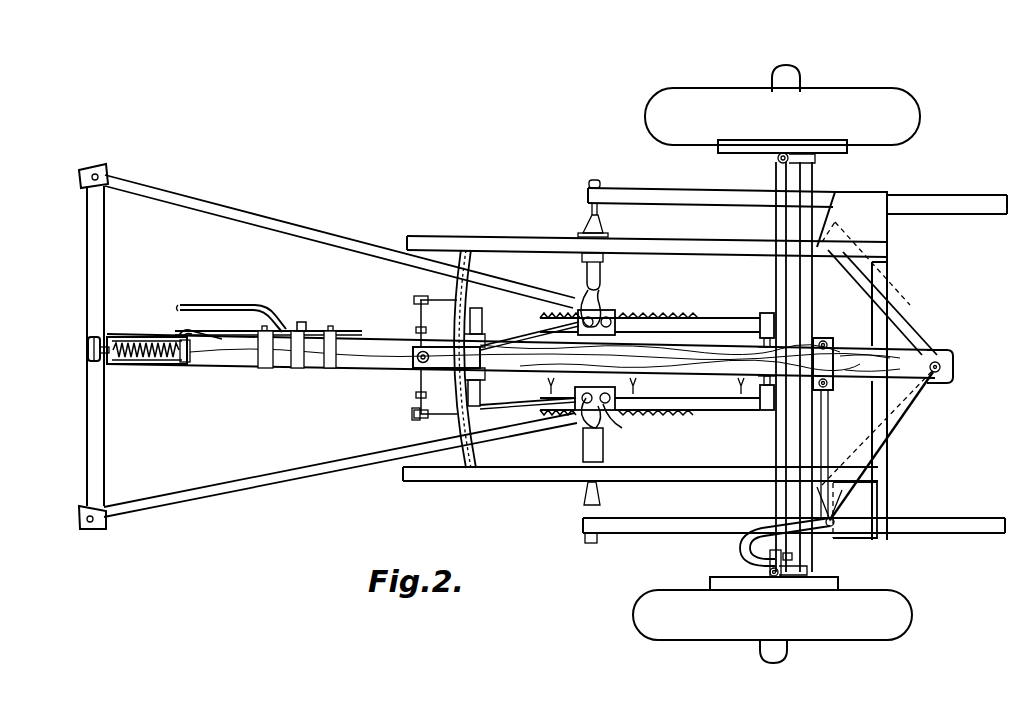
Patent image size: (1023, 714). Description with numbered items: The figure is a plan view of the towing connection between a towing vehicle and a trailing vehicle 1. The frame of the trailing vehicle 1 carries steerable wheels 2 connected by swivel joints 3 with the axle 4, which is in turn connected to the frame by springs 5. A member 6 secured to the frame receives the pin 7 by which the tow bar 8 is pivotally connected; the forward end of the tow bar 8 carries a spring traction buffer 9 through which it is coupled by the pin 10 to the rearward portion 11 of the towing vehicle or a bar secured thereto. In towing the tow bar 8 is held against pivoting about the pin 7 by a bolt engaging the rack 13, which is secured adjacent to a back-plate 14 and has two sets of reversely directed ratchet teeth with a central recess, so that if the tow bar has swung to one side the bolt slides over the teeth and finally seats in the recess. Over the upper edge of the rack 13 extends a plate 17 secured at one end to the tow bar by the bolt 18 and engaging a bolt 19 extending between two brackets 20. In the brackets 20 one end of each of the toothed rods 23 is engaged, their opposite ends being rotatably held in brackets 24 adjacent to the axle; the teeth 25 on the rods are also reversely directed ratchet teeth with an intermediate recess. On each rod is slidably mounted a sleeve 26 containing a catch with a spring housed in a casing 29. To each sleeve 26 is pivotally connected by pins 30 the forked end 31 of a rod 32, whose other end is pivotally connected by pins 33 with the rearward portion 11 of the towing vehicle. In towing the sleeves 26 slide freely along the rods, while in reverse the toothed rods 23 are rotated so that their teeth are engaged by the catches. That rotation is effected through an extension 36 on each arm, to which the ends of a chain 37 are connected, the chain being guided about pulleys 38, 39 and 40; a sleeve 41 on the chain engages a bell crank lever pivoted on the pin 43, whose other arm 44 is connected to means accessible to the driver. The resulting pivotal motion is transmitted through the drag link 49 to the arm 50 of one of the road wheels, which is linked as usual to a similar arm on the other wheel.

The trailing vehicle 1 is at (507, 470).
The steerable wheels 2 is at (893, 102).
The swivel joints 3 is at (786, 154).
The axle 4 is at (783, 215).
The springs 5 is at (947, 196).
The member 6 is at (922, 350).
The pin 7 is at (951, 368).
The tow bar 8 is at (902, 364).
The spring traction buffer 9 is at (133, 340).
The pin 10 is at (89, 349).
The rearward portion of the towing vehicle 11 is at (86, 433).
The rack 13 is at (468, 268).
The back-plate 14 is at (474, 266).
The plate 17 is at (440, 357).
The bolt 18 is at (419, 346).
The bolt 19 is at (487, 340).
The brackets 20 is at (481, 316).
The toothed rods 23 is at (706, 318).
The brackets 24 is at (767, 316).
The teeth 25 is at (649, 316).
The sleeve 26 is at (609, 414).
The casing 29 is at (606, 318).
The pins 30 is at (572, 403).
The forked end 31 is at (586, 300).
The rod 32 is at (280, 226).
The pins 33 is at (107, 174).
The extension 36 is at (431, 299).
The chain 37 is at (415, 416).
The pulley 38 is at (416, 370).
The pulley 39 is at (181, 336).
The pulley 40 is at (419, 346).
The sleeve 41 is at (245, 329).
The pin 43 is at (303, 322).
The arm 44 is at (209, 307).
The drag link 49 is at (824, 400).
The arm 50 is at (741, 554).